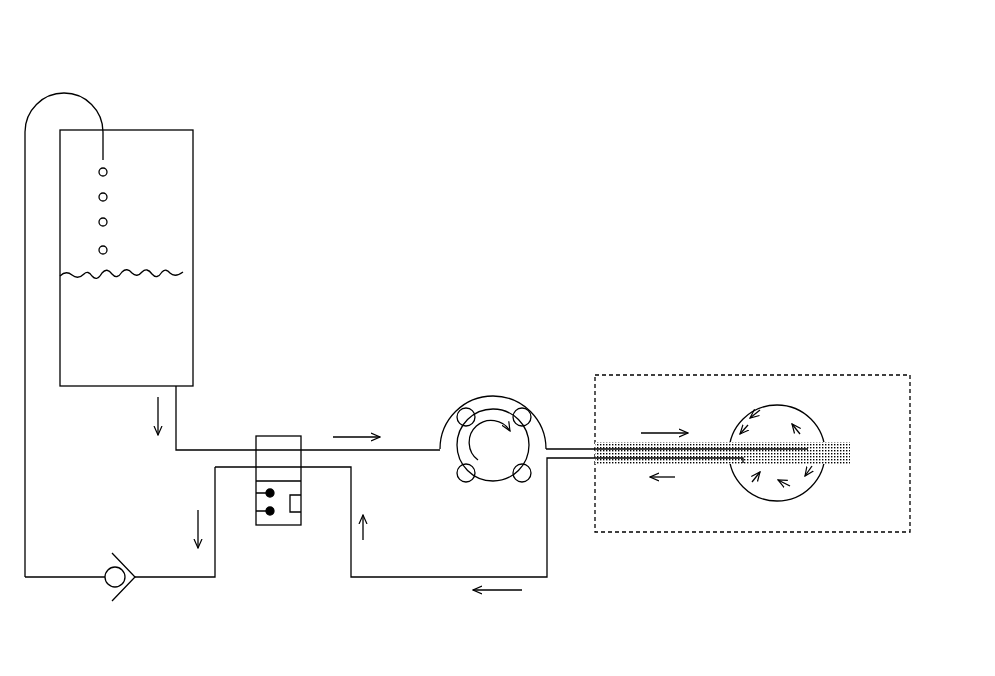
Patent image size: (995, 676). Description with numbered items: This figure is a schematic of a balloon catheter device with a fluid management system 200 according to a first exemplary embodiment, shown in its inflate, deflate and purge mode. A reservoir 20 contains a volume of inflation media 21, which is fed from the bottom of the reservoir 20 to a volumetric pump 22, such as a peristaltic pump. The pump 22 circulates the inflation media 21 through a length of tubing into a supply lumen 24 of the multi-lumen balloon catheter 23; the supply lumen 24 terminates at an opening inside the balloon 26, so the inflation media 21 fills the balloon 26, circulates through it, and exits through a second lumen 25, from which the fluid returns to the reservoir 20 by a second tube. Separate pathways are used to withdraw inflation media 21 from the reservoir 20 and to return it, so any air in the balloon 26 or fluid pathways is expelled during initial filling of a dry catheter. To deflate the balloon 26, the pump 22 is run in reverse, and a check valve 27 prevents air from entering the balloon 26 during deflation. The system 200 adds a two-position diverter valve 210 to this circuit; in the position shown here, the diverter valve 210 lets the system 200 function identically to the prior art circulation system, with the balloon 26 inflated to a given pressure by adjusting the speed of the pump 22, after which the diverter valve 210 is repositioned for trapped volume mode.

The fluid management system 200 is at (516, 113).
The reservoir 20 is at (193, 247).
The inflation media 21 is at (158, 334).
The diverter valve 210 is at (282, 448).
The volumetric pump 22 is at (489, 414).
The balloon catheter 23 is at (752, 427).
The supply lumen 24 is at (573, 449).
The second lumen 25 is at (584, 458).
The balloon 26 is at (807, 413).
The check valve 27 is at (107, 570).